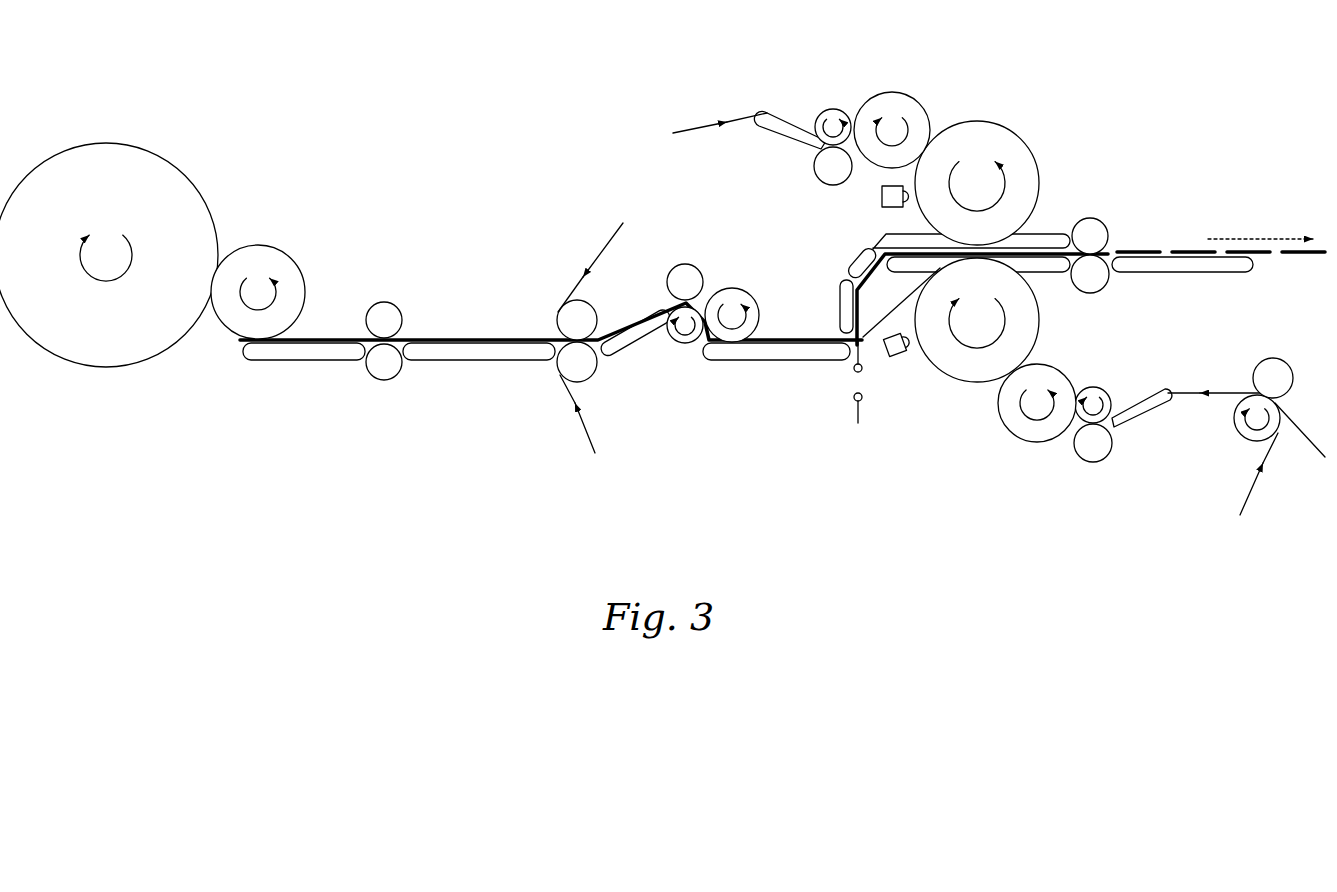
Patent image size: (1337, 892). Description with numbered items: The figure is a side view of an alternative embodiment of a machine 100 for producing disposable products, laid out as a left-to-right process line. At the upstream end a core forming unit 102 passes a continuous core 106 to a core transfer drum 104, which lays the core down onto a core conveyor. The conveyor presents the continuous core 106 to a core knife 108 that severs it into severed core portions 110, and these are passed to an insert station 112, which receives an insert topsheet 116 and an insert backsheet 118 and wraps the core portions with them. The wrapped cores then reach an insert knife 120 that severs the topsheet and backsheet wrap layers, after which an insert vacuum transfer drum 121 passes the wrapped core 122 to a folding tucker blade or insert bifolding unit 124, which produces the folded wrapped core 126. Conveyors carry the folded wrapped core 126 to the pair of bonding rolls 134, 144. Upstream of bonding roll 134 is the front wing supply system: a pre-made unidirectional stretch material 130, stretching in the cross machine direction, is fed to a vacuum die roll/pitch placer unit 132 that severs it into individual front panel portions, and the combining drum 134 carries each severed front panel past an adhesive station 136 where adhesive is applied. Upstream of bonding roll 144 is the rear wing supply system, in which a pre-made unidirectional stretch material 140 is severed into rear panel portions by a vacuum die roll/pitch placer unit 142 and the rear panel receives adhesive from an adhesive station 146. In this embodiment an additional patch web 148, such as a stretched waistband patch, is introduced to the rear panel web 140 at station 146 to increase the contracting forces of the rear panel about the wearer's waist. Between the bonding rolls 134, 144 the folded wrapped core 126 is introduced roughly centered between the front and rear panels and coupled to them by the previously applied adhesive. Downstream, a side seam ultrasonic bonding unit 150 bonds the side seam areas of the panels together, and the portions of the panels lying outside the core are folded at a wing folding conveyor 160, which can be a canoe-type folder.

The machine 100 is at (462, 112).
The core forming unit 102 is at (200, 195).
The core transfer drum 104 is at (275, 247).
The continuous core 106 is at (325, 343).
The core knife 108 is at (378, 302).
The severed core portions 110 is at (462, 343).
The insert station 112 is at (553, 318).
The insert topsheet 116 is at (606, 247).
The insert backsheet 118 is at (583, 427).
The insert knife 120 is at (687, 262).
The insert vacuum transfer drum 121 is at (732, 287).
The wrapped core 122 is at (778, 343).
The folding tucker blade or insert bifolding unit 124 is at (850, 370).
The folded wrapped core 126 is at (867, 258).
The pre-made unidirectional stretch material 130 is at (706, 125).
The vacuum die roll/pitch placer unit 132 is at (905, 95).
The bonding roll (combining drum) 134 is at (1008, 129).
The adhesive station 136 is at (882, 197).
The pre-made unidirectional stretch material (rear panel web) 140 is at (1305, 434).
The vacuum die roll/pitch placer unit 142 is at (1002, 425).
The bonding roll 144 is at (957, 378).
The adhesive station 146 is at (893, 356).
The patch web 148 is at (1256, 487).
The side seam ultrasonic bonding unit 150 is at (1082, 218).
The wing folding conveyor 160 is at (1185, 255).